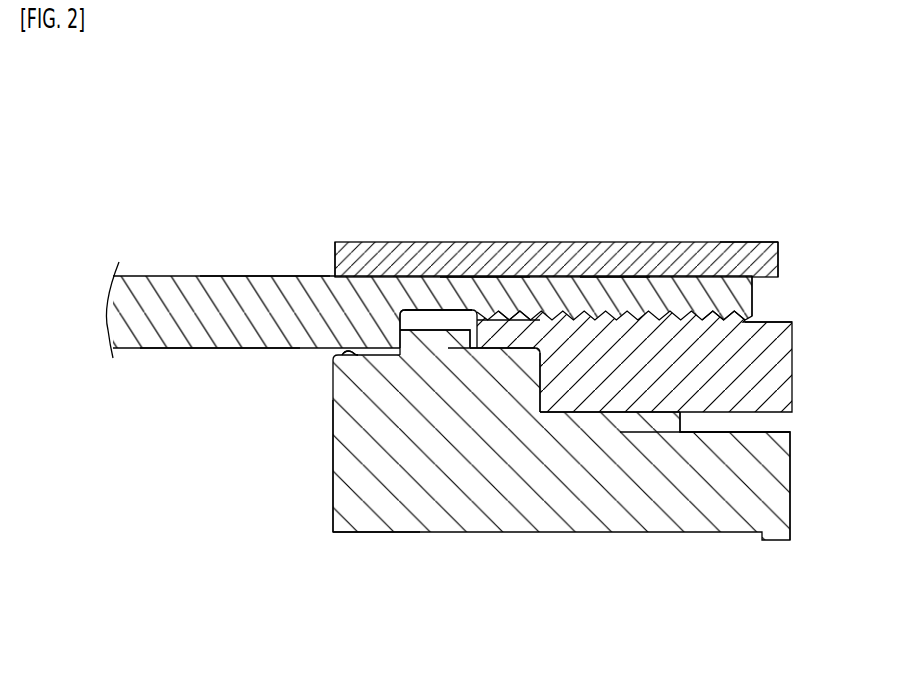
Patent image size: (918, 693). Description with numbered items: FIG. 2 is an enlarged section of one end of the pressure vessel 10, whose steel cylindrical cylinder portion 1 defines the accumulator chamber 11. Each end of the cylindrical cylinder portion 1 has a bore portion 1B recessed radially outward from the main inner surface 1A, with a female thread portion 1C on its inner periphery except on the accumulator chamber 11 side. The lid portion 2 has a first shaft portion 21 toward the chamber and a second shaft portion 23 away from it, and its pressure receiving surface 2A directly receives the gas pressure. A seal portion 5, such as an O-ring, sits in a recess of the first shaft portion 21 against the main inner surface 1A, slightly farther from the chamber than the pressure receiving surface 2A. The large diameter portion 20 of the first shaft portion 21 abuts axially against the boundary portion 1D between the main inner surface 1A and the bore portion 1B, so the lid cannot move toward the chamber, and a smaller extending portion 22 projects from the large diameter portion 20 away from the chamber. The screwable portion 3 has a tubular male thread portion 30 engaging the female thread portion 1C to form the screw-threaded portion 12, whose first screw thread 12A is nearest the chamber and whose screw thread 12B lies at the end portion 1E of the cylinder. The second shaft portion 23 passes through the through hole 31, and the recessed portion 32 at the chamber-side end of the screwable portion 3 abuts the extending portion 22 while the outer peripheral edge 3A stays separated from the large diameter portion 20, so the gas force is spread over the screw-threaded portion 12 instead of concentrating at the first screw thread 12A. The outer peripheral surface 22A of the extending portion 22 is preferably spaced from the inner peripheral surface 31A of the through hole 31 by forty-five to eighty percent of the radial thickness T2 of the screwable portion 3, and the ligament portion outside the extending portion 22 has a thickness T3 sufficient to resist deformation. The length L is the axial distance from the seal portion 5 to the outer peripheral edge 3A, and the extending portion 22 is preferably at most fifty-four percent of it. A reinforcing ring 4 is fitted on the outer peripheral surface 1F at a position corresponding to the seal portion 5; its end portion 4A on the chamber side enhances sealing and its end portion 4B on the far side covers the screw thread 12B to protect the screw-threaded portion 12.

The cylindrical cylinder portion 1 is at (183, 275).
The main inner surface 1A is at (175, 350).
The bore portion 1B is at (428, 308).
The female thread portion 1C is at (738, 300).
The boundary portion 1D is at (398, 307).
The end portion of the cylindrical cylinder portion 1E is at (750, 318).
The outer peripheral surface 1F is at (259, 267).
The lid portion 2 is at (333, 453).
The pressure receiving surface 2A is at (323, 489).
The screwable portion 3 is at (794, 413).
The outer peripheral edge 3A is at (501, 322).
The reinforcing ring 4 is at (613, 291).
The end portion of the reinforcing ring 4A is at (331, 272).
The end portion of the reinforcing ring 4B is at (780, 277).
The seal portion 5 is at (345, 350).
The pressure vessel 10 is at (192, 112).
The accumulator chamber 11 is at (206, 494).
The screw-threaded portion 12 is at (600, 262).
The first screw thread 12A is at (478, 308).
The screw thread 12B is at (760, 243).
The large diameter portion 20 is at (430, 310).
The first shaft portion 21 is at (338, 525).
The extending portion 22 is at (510, 360).
The outer peripheral surface 22A is at (519, 328).
The second shaft portion 23 is at (697, 517).
The male thread portion 30 is at (762, 326).
The through hole 31 is at (725, 423).
The inner peripheral surface 31A is at (622, 422).
The recessed portion 32 is at (548, 405).
The radial thickness T2 is at (755, 312).
The thickness of ligament portion T3 is at (453, 293).
The length L is at (477, 350).